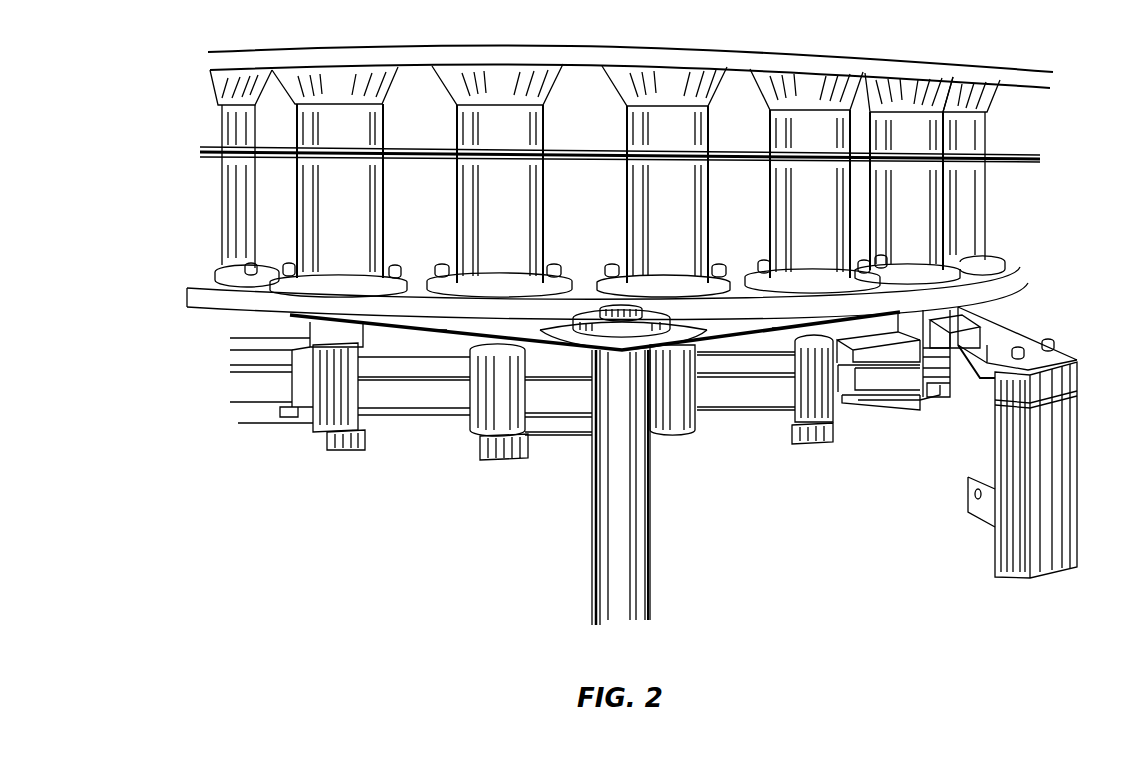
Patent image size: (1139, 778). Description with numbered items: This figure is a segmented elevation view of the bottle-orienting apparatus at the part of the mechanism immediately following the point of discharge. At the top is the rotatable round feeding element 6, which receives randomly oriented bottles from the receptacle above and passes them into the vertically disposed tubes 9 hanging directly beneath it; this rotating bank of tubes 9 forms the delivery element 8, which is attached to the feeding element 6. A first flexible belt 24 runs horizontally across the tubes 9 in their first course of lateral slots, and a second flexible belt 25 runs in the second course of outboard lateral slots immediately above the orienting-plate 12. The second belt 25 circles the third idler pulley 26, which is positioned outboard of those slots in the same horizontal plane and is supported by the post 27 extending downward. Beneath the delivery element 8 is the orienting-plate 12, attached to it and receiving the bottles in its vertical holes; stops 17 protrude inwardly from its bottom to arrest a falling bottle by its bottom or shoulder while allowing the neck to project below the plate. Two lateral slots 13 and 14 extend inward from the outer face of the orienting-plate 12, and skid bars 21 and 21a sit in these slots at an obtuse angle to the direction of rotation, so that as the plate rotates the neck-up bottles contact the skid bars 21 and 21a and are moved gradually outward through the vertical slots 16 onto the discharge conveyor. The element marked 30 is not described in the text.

The feeding element 6 is at (678, 48).
The delivery element 8 is at (210, 287).
The tubes 9 is at (915, 235).
The orienting-plate 12 is at (243, 383).
The lateral slot 13 is at (380, 378).
The lateral slot 14 is at (437, 413).
The vertical slots 16 is at (937, 395).
The stops 17 is at (467, 440).
The skid bar 21 is at (1015, 338).
The skid bar 21a is at (992, 390).
The first flexible belt 24 is at (1012, 155).
The second flexible belt 25 is at (442, 332).
The third idler pulley 26 is at (567, 330).
The post 27 is at (633, 517).
The support post 30 is at (1068, 467).